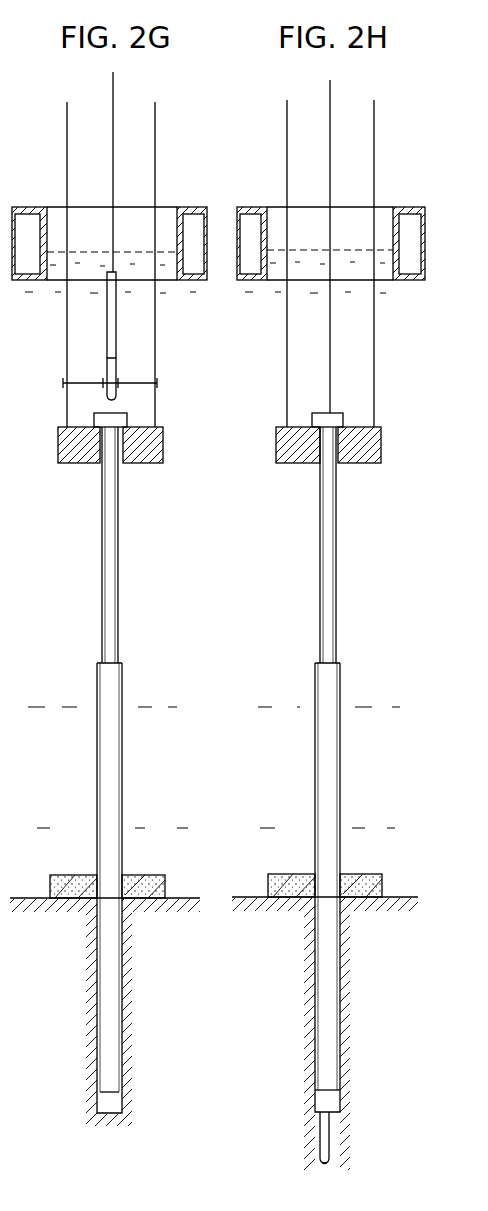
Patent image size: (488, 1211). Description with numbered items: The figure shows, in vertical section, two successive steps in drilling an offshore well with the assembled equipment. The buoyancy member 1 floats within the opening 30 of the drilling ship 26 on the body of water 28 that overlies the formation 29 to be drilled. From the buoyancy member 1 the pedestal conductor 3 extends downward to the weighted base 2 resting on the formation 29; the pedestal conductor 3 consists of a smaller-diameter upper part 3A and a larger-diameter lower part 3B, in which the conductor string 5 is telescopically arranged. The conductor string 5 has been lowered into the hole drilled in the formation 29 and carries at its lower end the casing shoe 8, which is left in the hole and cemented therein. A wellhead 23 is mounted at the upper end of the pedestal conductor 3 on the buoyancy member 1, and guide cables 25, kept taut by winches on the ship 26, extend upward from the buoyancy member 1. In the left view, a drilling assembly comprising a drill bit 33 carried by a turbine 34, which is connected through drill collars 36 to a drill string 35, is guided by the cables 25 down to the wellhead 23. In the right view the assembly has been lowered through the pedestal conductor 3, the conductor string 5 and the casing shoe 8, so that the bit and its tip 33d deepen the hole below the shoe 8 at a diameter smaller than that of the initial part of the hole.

In FIG. 2G, the buoyancy member 1 is at (160, 460).
In FIG. 2H, the buoyancy member 1 is at (368, 460).
In FIG. 2G, the weighted base 2 is at (156, 875).
In FIG. 2H, the weighted base 2 is at (372, 874).
In FIG. 2G, the pedestal conductor 3 is at (148, 662).
In FIG. 2G, the upper part of pedestal conductor 3A is at (136, 545).
In FIG. 2H, the upper part of pedestal conductor 3A is at (353, 545).
In FIG. 2G, the lower part of pedestal conductor 3B is at (122, 698).
In FIG. 2H, the lower part of pedestal conductor 3B is at (340, 753).
In FIG. 2G, the conductor string 5 is at (112, 960).
In FIG. 2H, the conductor string 5 is at (330, 1003).
In FIG. 2G, the casing shoe 8 is at (112, 1105).
In FIG. 2H, the casing shoe 8 is at (345, 1071).
In FIG. 2G, the wellhead 23 is at (96, 420).
In FIG. 2H, the wellhead 23 is at (335, 408).
In FIG. 2G, the guide cables 25 is at (166, 148).
In FIG. 2H, the guide cables 25 is at (375, 325).
In FIG. 2H, the drilling ship 26 is at (250, 207).
In FIG. 2H, the body of water 28 is at (270, 531).
In FIG. 2H, the formation 29 is at (273, 945).
In FIG. 2H, the opening of the ship 30 is at (392, 216).
In FIG. 2G, the drill bit 33 is at (110, 402).
In FIG. 2H, the probe tip 33d is at (322, 1163).
In FIG. 2G, the turbine 34 is at (116, 368).
In FIG. 2H, the turbine 34 is at (330, 1133).
In FIG. 2G, the drill string 35 is at (125, 142).
In FIG. 2H, the drill string 35 is at (330, 158).
In FIG. 2G, the drill collars 36 is at (116, 323).